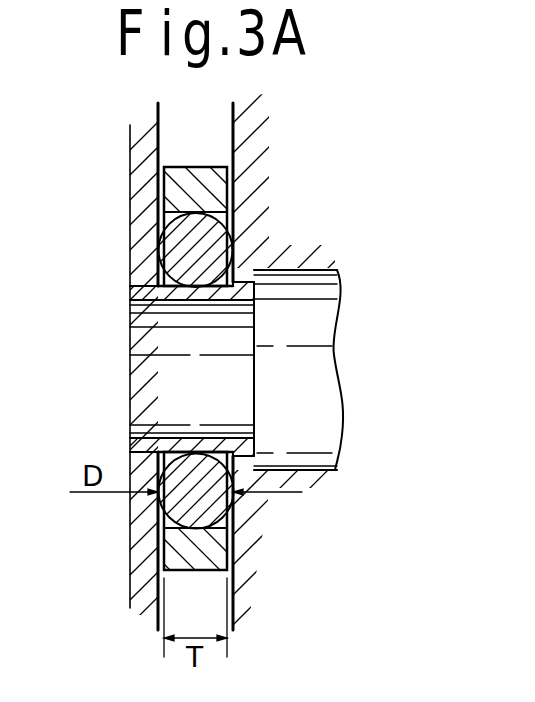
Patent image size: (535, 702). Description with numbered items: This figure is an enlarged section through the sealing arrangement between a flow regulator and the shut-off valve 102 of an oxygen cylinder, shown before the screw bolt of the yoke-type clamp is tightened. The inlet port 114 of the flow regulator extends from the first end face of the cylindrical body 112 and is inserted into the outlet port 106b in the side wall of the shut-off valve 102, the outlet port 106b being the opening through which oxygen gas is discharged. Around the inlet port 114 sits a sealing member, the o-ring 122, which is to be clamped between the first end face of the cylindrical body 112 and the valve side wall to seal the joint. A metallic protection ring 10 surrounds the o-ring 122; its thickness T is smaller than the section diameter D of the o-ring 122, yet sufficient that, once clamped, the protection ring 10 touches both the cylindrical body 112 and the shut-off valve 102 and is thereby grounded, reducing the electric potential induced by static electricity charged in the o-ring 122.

The protection ring 10 is at (178, 172).
The shut-off valve 102 is at (234, 118).
The cylindrical body 112 is at (140, 158).
The inlet port 114 is at (225, 440).
The o-ring 122 is at (215, 242).
The outlet port 106b is at (300, 270).